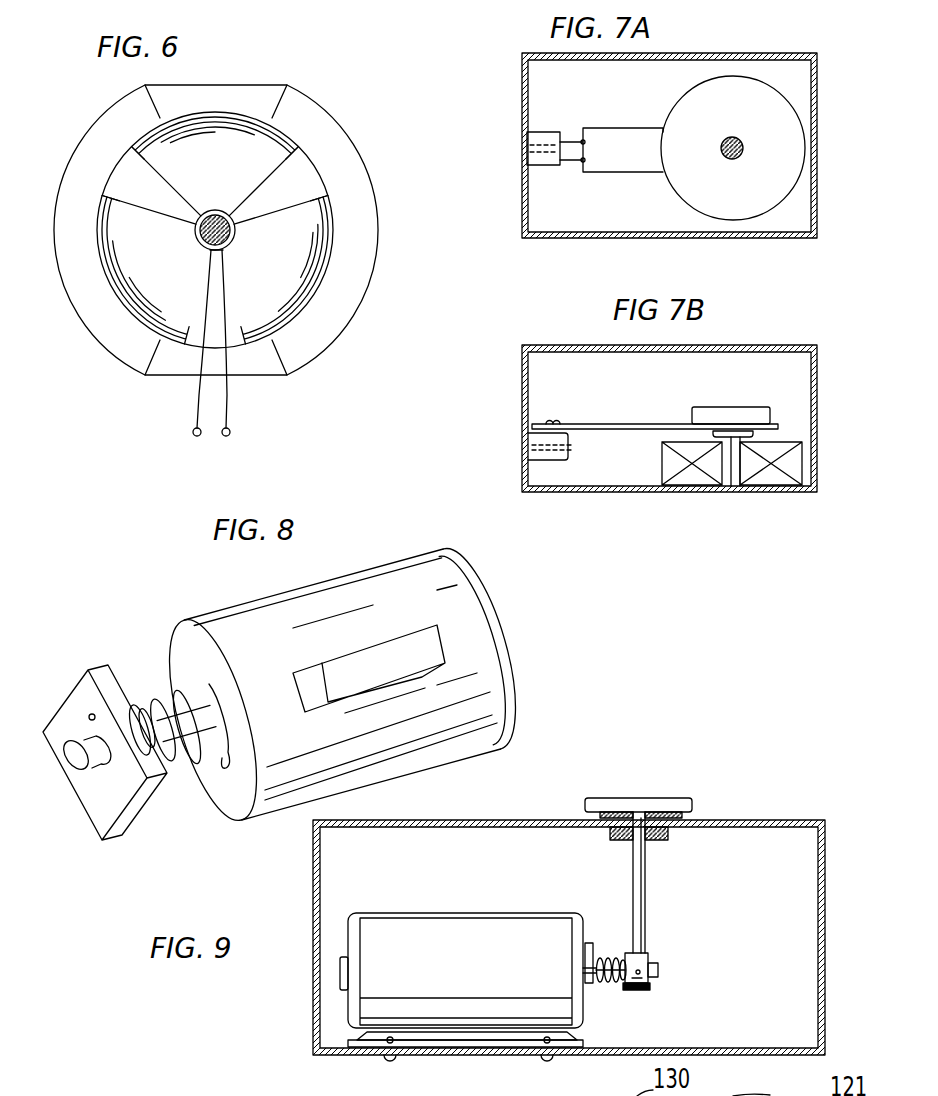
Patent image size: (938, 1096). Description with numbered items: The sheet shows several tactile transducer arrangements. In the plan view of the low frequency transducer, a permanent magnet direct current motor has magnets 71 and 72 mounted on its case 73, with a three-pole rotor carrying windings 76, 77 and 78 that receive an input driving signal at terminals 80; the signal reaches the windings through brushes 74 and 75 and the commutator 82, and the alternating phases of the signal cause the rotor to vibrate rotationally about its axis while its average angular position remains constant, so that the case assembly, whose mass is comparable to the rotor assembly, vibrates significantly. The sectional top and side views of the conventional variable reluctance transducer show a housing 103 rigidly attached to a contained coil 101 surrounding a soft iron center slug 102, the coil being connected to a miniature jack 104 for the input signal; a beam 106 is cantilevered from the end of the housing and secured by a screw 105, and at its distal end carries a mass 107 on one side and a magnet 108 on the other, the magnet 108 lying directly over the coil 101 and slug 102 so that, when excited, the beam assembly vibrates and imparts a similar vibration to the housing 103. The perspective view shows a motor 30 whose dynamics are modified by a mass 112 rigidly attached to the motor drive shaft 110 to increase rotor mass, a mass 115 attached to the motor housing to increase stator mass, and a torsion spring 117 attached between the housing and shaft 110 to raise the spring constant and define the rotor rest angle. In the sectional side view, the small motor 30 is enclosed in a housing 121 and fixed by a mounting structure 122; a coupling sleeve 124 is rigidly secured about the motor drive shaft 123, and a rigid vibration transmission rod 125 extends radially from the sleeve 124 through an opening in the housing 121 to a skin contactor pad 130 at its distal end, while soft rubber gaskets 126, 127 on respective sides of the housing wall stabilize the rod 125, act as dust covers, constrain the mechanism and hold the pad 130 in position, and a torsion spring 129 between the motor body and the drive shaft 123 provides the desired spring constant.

In FIG. 6, the magnet 71 is at (347, 165).
In FIG. 6, the magnet 72 is at (102, 132).
In FIG. 6, the case 73 is at (263, 83).
In FIG. 6, the brush 74 is at (235, 208).
In FIG. 6, the brush 75 is at (217, 253).
In FIG. 6, the winding 76 is at (297, 275).
In FIG. 6, the winding 77 is at (270, 145).
In FIG. 6, the winding 78 is at (127, 293).
In FIG. 6, the terminals 80 is at (200, 437).
In FIG. 6, the commutator 82 is at (197, 237).
In FIG. 7A, the coil 101 is at (782, 110).
In FIG. 7B, the coil 101 is at (793, 460).
In FIG. 7A, the soft iron center slug 102 is at (740, 157).
In FIG. 7B, the soft iron center slug 102 is at (735, 487).
In FIG. 7A, the housing 103 is at (797, 238).
In FIG. 7B, the housing 103 is at (535, 347).
In FIG. 7A, the miniature jack 104 is at (552, 132).
In FIG. 7B, the miniature jack 104 is at (542, 460).
In FIG. 7B, the screw 105 is at (548, 422).
In FIG. 7B, the beam 106 is at (625, 423).
In FIG. 7B, the mass 107 is at (743, 407).
In FIG. 7B, the magnet 108 is at (752, 435).
In FIG. 8, the motor 30 is at (278, 697).
In FIG. 9, the motor 30 is at (437, 920).
In FIG. 8, the motor drive shaft 110 is at (68, 768).
In FIG. 8, the mass 112 is at (137, 810).
In FIG. 8, the mass 115 is at (392, 648).
In FIG. 8, the torsion spring 117 is at (162, 697).
In FIG. 9, the housing 121 is at (827, 848).
In FIG. 9, the mounting structure 122 is at (443, 1047).
In FIG. 9, the motor drive shaft 123 is at (660, 970).
In FIG. 9, the coupling sleeve 124 is at (645, 990).
In FIG. 9, the vibration transmission rod 125 is at (645, 897).
In FIG. 9, the soft rubber gasket 126 is at (660, 840).
In FIG. 9, the soft rubber gasket 127 is at (688, 817).
In FIG. 9, the torsion spring 129 is at (607, 987).
In FIG. 9, the skin contactor pad 130 is at (625, 803).